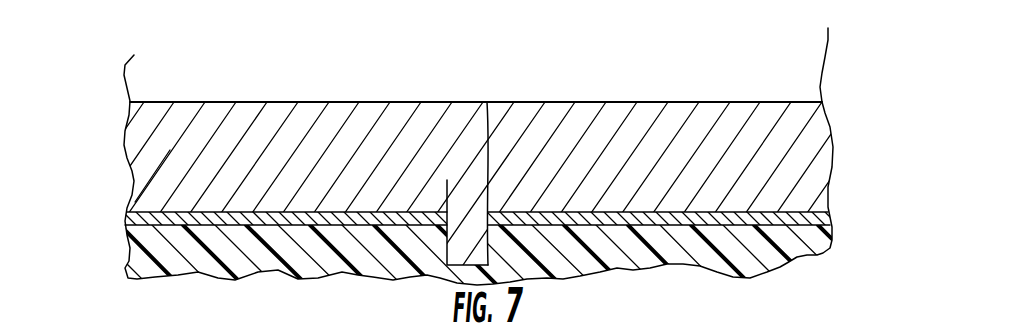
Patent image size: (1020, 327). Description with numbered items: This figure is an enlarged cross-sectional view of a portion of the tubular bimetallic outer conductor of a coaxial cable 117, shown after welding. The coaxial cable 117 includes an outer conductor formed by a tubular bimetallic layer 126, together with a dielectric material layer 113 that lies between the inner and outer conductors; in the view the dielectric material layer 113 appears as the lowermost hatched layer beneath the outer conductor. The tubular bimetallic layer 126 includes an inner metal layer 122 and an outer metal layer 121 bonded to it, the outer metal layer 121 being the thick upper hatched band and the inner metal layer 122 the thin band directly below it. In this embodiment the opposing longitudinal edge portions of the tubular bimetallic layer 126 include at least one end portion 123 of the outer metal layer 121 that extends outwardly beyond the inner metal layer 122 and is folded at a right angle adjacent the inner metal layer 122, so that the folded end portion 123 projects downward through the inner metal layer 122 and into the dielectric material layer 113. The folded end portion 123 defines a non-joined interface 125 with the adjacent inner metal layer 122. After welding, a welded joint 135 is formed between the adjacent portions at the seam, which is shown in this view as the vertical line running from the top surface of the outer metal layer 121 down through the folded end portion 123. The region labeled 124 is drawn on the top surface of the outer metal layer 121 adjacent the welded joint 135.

The coaxial cable 117 is at (196, 62).
The outer metal layer 121 is at (815, 132).
The inner metal layer 122 is at (822, 218).
The dielectric material layer 113 is at (822, 240).
The end portion 123 is at (418, 96).
The second surface portion 124 is at (532, 96).
The non-joined interface 125 is at (445, 198).
The welded joint 135 is at (487, 102).
The tubular bimetallic layer 126 is at (152, 172).